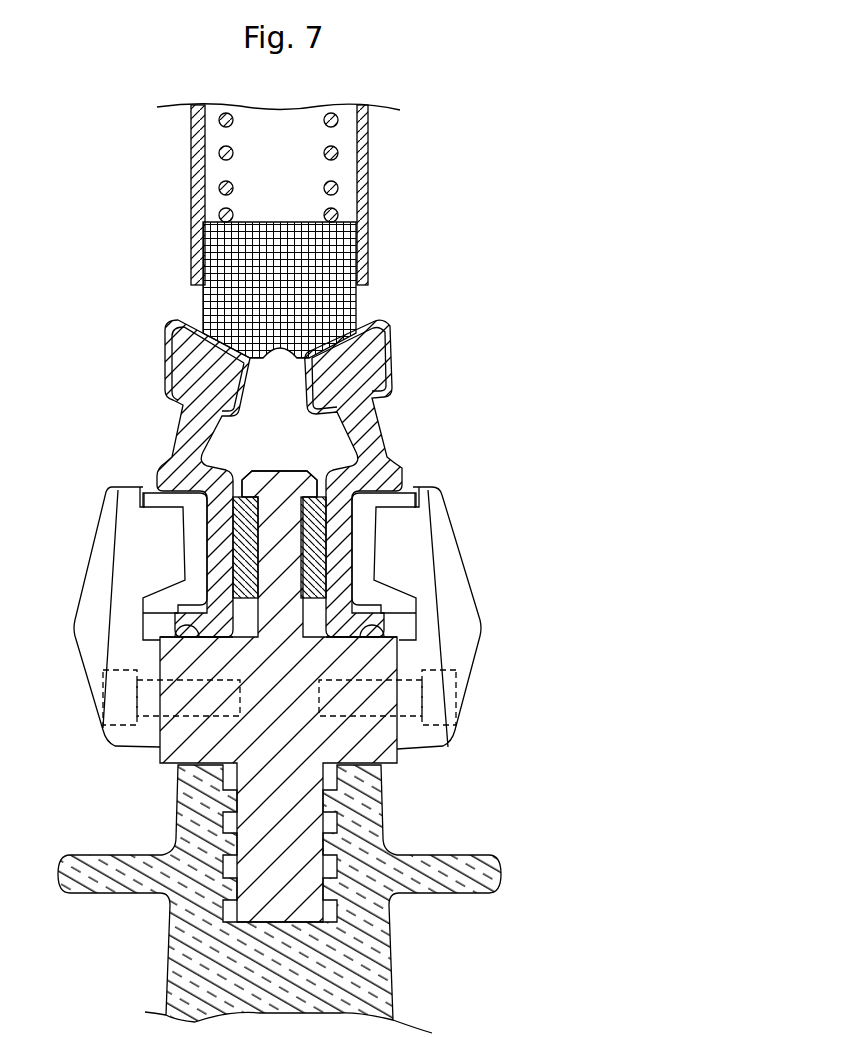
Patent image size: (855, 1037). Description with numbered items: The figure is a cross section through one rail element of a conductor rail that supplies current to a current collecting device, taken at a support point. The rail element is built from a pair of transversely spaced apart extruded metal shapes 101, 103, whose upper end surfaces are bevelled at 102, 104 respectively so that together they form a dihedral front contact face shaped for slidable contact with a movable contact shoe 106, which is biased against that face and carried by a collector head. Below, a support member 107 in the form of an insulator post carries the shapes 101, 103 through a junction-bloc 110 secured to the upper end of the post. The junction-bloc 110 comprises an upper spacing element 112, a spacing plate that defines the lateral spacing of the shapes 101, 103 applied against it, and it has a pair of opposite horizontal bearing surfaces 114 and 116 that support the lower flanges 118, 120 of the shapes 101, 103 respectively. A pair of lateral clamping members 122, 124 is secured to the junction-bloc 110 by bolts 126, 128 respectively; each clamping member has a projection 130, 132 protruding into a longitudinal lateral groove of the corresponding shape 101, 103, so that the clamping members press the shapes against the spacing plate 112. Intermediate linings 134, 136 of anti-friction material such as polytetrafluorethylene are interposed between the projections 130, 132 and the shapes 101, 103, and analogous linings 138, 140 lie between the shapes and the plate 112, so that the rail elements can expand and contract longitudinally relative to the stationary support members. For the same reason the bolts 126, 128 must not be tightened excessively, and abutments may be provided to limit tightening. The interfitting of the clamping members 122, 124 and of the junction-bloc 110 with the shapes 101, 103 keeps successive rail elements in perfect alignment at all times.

The extruded metal shape 101 is at (366, 418).
The bevelled upper end surface 102 is at (383, 320).
The extruded metal shape 103 is at (190, 435).
The bevelled upper end surface 104 is at (167, 318).
The movable contact shoe 106 is at (327, 258).
The support member 107 is at (393, 866).
The junction-bloc 110 is at (215, 737).
The upper spacing element 112 is at (264, 487).
The horizontal bearing surface 114 is at (356, 636).
The horizontal bearing surface 116 is at (187, 617).
The lower flange 118 is at (367, 623).
The lower flange 120 is at (207, 635).
The lateral clamping member 122 is at (425, 597).
The lateral clamping member 124 is at (95, 593).
The bolt 126 is at (453, 685).
The bolt 128 is at (103, 677).
The projection 130 is at (382, 557).
The projection 132 is at (167, 550).
The intermediate lining 134 is at (392, 497).
The intermediate lining 136 is at (140, 500).
The lining 138 is at (310, 513).
The lining 140 is at (245, 508).